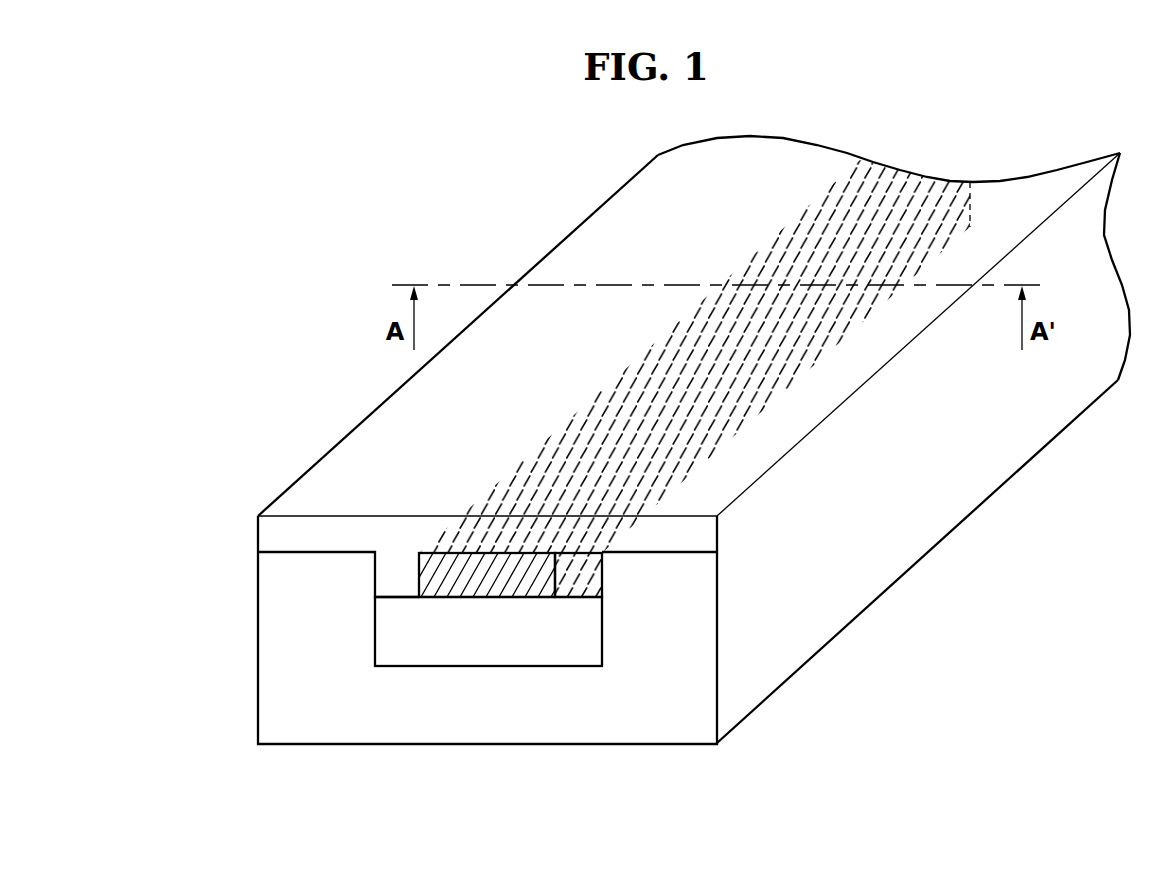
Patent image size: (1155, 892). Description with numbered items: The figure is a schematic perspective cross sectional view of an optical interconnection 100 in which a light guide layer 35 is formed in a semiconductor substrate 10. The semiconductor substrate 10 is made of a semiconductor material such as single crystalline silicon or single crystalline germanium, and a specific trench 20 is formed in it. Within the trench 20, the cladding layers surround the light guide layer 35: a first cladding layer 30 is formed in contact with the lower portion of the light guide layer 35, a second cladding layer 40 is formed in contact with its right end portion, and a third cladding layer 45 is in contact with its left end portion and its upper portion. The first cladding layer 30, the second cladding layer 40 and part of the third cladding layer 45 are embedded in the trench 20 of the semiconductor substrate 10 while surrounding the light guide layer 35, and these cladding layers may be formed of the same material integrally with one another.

The optical interconnection 100 is at (337, 159).
The semiconductor substrate 10 is at (353, 727).
The trench 20 is at (375, 633).
The first cladding layer 30 is at (548, 638).
The light guide layer 35 is at (467, 597).
The second cladding layer 40 is at (588, 583).
The third cladding layer 45 is at (275, 537).